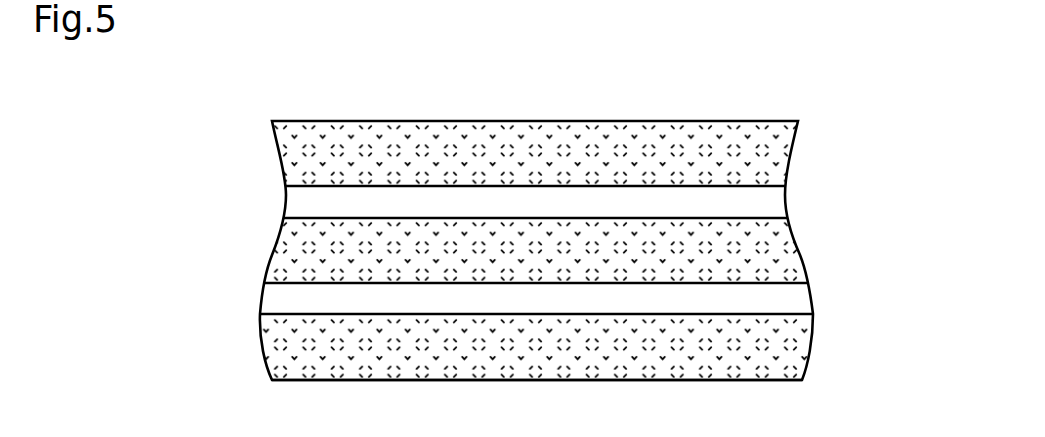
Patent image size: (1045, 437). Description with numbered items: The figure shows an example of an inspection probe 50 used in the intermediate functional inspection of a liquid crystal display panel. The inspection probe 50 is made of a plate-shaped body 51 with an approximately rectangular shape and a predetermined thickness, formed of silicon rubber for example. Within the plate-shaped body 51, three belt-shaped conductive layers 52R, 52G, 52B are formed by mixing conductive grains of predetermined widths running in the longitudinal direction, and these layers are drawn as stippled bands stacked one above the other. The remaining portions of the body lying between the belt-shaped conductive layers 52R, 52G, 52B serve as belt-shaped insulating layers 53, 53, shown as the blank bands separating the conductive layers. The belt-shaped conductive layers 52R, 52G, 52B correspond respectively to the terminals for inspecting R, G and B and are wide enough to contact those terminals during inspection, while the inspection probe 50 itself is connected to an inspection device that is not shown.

The inspection probe 50 is at (657, 104).
The plate-shaped body 51 is at (271, 360).
The belt-shaped conductive layer 52R is at (777, 153).
The belt-shaped conductive layer 52G is at (782, 252).
The belt-shaped conductive layer 52B is at (795, 348).
The belt-shaped insulating layer 53 is at (770, 202).